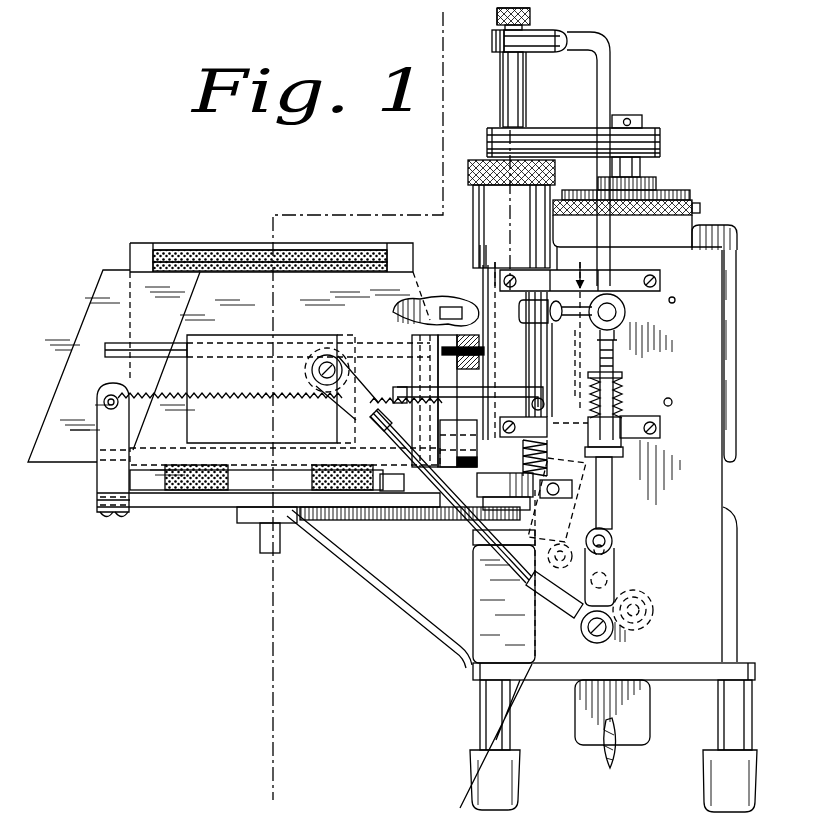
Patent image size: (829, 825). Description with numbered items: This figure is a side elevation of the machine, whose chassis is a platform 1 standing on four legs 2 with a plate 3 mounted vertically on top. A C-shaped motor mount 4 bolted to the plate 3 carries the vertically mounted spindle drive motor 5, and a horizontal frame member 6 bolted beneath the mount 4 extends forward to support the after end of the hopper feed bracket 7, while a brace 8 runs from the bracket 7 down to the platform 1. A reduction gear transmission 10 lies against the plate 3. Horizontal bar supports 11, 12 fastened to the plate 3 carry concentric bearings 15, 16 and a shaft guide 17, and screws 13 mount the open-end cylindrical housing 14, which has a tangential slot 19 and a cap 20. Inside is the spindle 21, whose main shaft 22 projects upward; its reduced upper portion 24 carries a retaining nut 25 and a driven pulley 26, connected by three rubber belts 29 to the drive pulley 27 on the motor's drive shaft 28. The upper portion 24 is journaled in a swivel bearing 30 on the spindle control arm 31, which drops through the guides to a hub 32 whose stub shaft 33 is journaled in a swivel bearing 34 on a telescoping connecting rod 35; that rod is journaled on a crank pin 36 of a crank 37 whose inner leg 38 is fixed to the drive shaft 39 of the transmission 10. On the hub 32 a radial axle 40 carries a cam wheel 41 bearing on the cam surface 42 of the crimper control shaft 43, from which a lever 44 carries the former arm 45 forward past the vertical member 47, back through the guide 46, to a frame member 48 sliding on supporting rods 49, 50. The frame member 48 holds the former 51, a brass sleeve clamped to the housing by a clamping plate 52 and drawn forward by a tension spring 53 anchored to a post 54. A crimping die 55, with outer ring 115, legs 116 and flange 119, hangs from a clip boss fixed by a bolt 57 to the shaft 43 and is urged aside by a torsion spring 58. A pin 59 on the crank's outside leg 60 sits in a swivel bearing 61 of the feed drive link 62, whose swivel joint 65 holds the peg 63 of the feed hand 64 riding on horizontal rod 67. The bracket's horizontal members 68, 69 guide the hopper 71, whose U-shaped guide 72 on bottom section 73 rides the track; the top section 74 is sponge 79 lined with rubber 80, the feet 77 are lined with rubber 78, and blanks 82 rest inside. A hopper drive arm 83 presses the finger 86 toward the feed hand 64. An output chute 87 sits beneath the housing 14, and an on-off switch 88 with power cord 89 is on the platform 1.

The platform 1 is at (472, 668).
The legs 2 is at (437, 22).
The plate 3 is at (700, 480).
The C-shaped motor mount 4 is at (696, 205).
The spindle drive motor 5 is at (732, 247).
The horizontal frame member 6 is at (491, 40).
The hopper feed bracket 7 is at (190, 516).
The brace 8 is at (381, 590).
The reduction gear transmission 10 is at (736, 548).
The horizontal bar support 11 is at (627, 247).
The horizontal bar support 12 is at (638, 415).
The screws 13 is at (510, 272).
The cylindrical housing 14 is at (472, 225).
The bearing 15 is at (540, 278).
The bearing 16 is at (552, 423).
The shaft guide 17 is at (603, 283).
The slot 19 is at (479, 247).
The cap 20 is at (480, 162).
The spindle 21 is at (500, 117).
The main shaft 22 is at (502, 70).
The upper portion of the main shaft 24 is at (530, 15).
The retaining nut 25 is at (497, 17).
The driven pulley 26 is at (531, 128).
The drive pulley 27 is at (650, 128).
The drive shaft 28 is at (641, 166).
The rubber belts 29 is at (570, 126).
The swivel bearing 30 is at (527, 42).
The spindle control arm 31 is at (611, 40).
The hub 32 is at (626, 312).
The collar 33 is at (618, 326).
The swivel bearing 34 is at (620, 350).
The connecting rod 35 is at (622, 380).
The crank pin 36 is at (614, 535).
The crank 37 is at (616, 556).
The inner leg 38 is at (613, 575).
The drive shaft 39 is at (613, 585).
The axle 40 is at (590, 326).
The cam wheel 41 is at (531, 338).
The cam surface 42 is at (521, 312).
The crimper control shaft 43 is at (529, 360).
The lever 44 is at (535, 406).
The former arm 45 is at (440, 385).
The guide 46 is at (470, 370).
The vertical member 47 is at (411, 338).
The frame member 48 is at (519, 328).
The supporting rod 49 is at (458, 350).
The supporting rod 50 is at (462, 421).
The former 51 is at (481, 456).
The clamping plate 52 is at (440, 308).
The tension spring 53 is at (250, 396).
The post 54 is at (97, 403).
The crimping die 55 is at (425, 521).
The bolt 57 is at (562, 488).
The torsion spring 58 is at (580, 465).
The pin 59 is at (582, 634).
The outside leg 60 is at (641, 610).
The swivel bearing 61 is at (572, 608).
The feed drive link 62 is at (473, 549).
The peg 63 is at (318, 376).
The feed hand 64 is at (257, 345).
The swivel joint 65 is at (318, 358).
The horizontal rod 67 is at (145, 345).
The horizontal member 68 is at (190, 458).
The horizontal member 69 is at (160, 516).
The hopper 71 is at (127, 258).
The U-shaped guide 72 is at (237, 517).
The bottom section 73 is at (128, 497).
The top section 74 is at (230, 248).
The feet 77 is at (228, 482).
The rubber-like material 78 is at (225, 466).
The resilient sponge material 79 is at (210, 250).
The rubber-like material 80 is at (228, 272).
The blanks 82 is at (85, 310).
The hopper drive arm 83 is at (360, 521).
The vertical finger 86 is at (262, 549).
The output chute 87 is at (527, 703).
The on-off switch 88 is at (574, 690).
The power cord 89 is at (607, 758).
The outer ring 115 is at (416, 476).
The legs 116 is at (501, 487).
The annular flange 119 is at (515, 498).